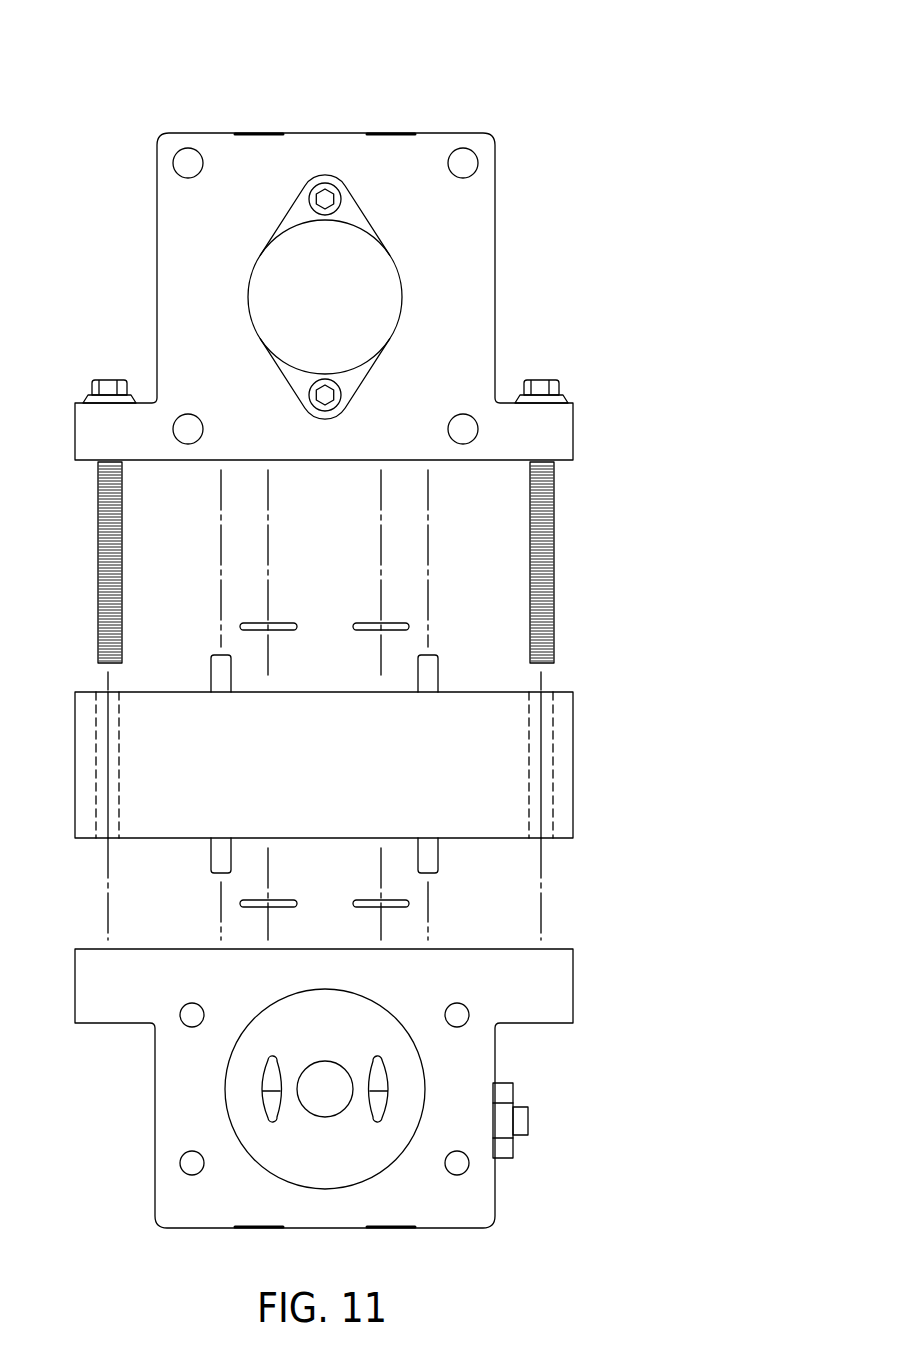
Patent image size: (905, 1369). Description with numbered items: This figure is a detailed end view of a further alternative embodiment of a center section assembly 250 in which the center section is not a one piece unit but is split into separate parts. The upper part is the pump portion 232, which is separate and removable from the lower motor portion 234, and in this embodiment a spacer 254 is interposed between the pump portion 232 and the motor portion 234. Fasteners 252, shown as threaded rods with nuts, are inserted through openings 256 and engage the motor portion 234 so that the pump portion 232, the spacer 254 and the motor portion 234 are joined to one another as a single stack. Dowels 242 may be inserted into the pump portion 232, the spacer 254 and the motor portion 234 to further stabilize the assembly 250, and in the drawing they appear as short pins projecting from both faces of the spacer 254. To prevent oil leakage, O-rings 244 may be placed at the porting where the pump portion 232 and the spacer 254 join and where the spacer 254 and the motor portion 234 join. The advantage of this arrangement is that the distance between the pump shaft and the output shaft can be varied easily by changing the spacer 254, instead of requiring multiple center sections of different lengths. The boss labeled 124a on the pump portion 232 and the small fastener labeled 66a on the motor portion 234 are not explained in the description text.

The center section assembly 250 is at (128, 84).
The pump portion 232 is at (157, 270).
The bearing boss 124a is at (355, 311).
The fasteners 252 is at (106, 380).
The O-rings 244 is at (367, 622).
The dowels 242 is at (211, 678).
The spacer 254 is at (347, 777).
The openings 256 is at (102, 840).
The motor portion 234 is at (155, 1070).
The set screw 66a is at (513, 1150).